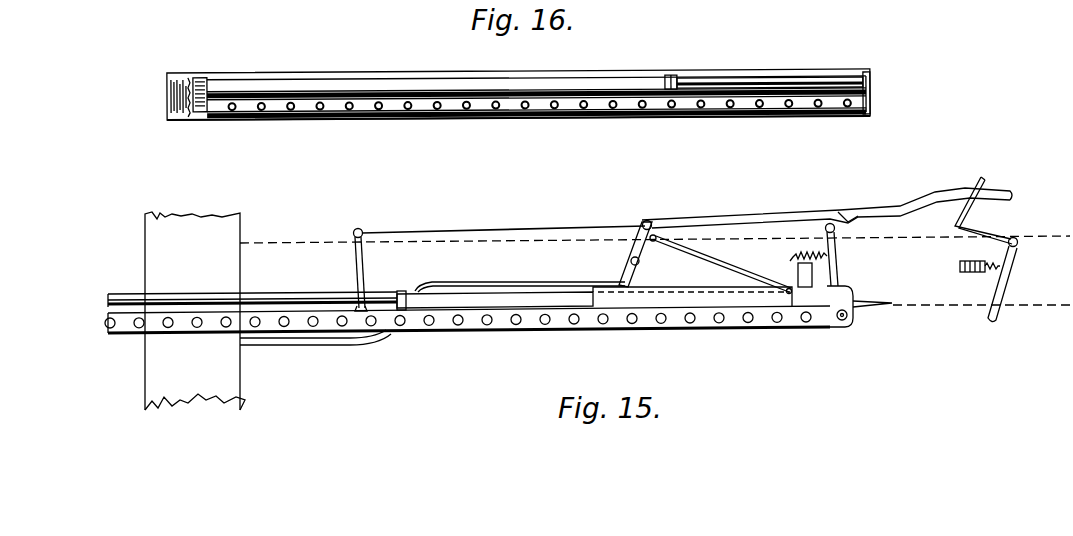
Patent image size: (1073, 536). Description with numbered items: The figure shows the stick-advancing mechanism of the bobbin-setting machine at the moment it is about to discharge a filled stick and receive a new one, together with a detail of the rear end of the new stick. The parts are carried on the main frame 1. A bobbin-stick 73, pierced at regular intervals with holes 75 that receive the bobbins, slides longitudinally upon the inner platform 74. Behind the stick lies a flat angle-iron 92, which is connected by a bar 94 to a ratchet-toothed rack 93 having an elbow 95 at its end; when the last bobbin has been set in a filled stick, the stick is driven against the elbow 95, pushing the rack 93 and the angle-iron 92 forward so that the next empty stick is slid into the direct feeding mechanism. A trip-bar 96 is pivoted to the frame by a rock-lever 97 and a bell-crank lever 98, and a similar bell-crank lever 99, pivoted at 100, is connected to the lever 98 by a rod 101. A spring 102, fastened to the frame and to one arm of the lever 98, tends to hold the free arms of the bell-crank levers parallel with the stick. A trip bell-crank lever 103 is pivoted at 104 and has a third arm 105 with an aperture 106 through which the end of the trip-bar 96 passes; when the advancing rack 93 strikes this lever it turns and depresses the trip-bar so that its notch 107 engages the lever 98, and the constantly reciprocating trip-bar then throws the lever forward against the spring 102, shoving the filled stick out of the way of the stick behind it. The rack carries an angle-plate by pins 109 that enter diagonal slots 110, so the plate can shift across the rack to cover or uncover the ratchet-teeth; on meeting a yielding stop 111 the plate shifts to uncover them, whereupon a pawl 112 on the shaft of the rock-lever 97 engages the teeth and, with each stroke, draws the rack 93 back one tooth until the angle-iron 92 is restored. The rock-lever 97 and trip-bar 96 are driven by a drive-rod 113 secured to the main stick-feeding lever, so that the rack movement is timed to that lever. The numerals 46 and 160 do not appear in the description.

In FIG. 15, the main frame 1 is at (195, 311).
In FIG. 16, the holes 46 is at (403, 109).
In FIG. 16, the bobbin-stick 73 is at (657, 105).
In FIG. 15, the bobbin-stick 73 is at (500, 326).
In FIG. 16, the inner platform 74 is at (784, 78).
In FIG. 15, the holes 75 is at (135, 331).
In FIG. 16, the flat angle-iron 92 is at (695, 82).
In FIG. 15, the ratchet-toothed rack 93 is at (487, 307).
In FIG. 16, the bar 94 is at (840, 82).
In FIG. 15, the bar 94 is at (323, 276).
In FIG. 15, the elbow 95 is at (855, 311).
In FIG. 15, the trip-bar 96 is at (828, 182).
In FIG. 15, the rock-lever 97 is at (632, 256).
In FIG. 15, the bell-crank lever 98 is at (836, 280).
In FIG. 15, the bell-crank lever 99 is at (362, 282).
In FIG. 15, the pivot 100 is at (357, 313).
In FIG. 15, the rod 101 is at (524, 223).
In FIG. 15, the spring 102 is at (797, 258).
In FIG. 15, the trip bell-crank lever 103 is at (1009, 286).
In FIG. 15, the pivot 104 is at (1019, 243).
In FIG. 15, the third arm 105 is at (964, 222).
In FIG. 15, the aperture 106 is at (978, 196).
In FIG. 15, the notch 107 is at (850, 219).
In FIG. 15, the pins 109 is at (783, 291).
In FIG. 15, the slots 110 is at (648, 294).
In FIG. 15, the yielding stop 111 is at (972, 271).
In FIG. 15, the pawl 112 is at (720, 263).
In FIG. 15, the drive-rod 113 is at (540, 277).
In FIG. 15, the block 160 is at (789, 303).